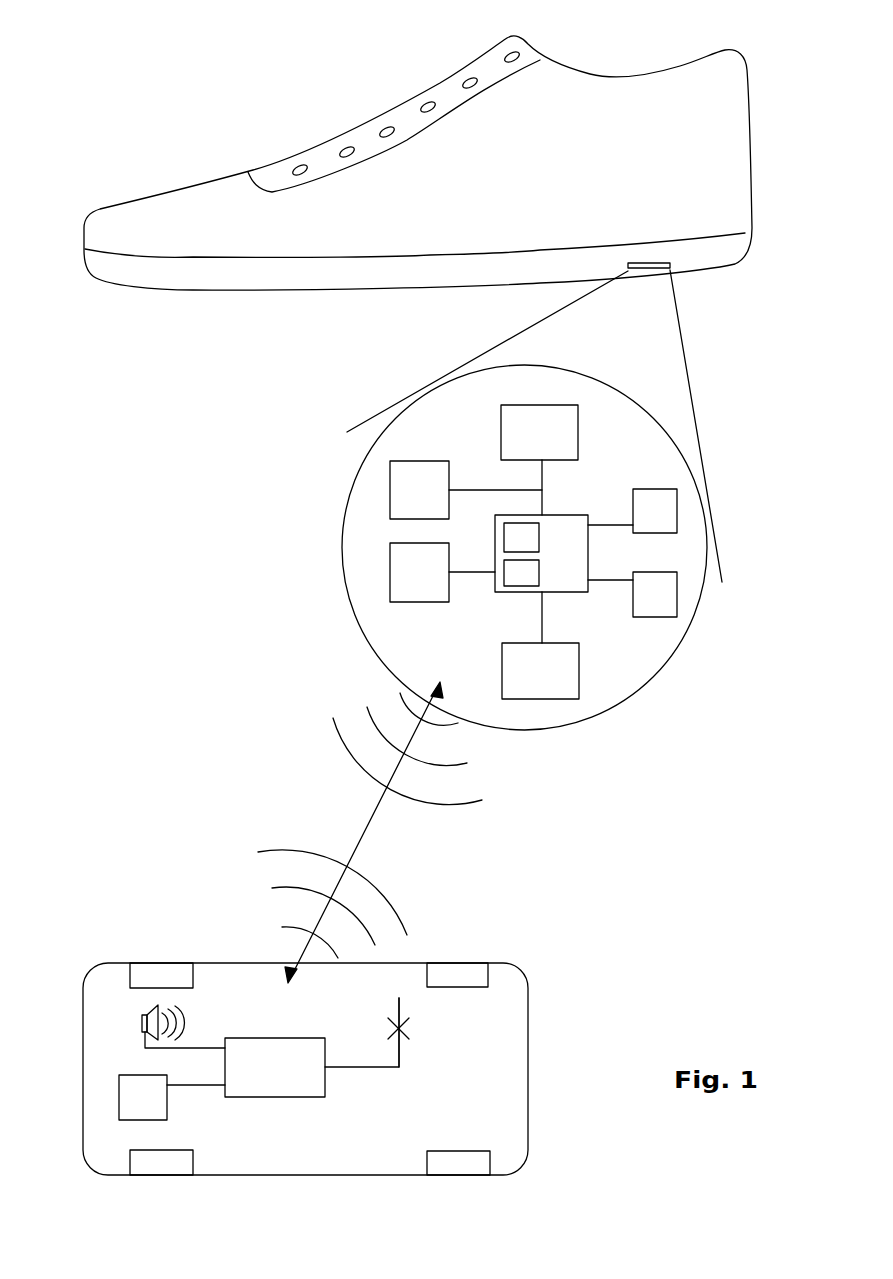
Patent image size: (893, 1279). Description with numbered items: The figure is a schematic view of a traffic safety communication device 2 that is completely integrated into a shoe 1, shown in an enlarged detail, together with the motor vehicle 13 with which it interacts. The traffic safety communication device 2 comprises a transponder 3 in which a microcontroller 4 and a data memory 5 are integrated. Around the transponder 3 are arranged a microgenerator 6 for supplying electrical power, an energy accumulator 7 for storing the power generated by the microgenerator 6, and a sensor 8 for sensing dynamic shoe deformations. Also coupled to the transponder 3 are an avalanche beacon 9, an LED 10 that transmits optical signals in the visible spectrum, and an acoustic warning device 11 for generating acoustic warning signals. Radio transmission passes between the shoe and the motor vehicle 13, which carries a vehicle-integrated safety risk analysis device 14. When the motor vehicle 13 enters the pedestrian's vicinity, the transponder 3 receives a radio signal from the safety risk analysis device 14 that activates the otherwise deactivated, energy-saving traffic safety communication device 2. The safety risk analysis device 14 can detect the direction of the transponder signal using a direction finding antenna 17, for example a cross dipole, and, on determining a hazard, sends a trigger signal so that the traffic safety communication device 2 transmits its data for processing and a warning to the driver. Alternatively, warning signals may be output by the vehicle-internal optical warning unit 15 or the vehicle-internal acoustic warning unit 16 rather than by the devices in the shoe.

The shoe 1 is at (217, 245).
The traffic safety communication device 2 is at (668, 640).
The transponder 3 is at (563, 550).
The microcontroller 4 is at (515, 535).
The data memory 5 is at (517, 580).
The microgenerator 6 is at (515, 432).
The energy accumulator 7 is at (402, 505).
The sensor 8 is at (557, 655).
The avalanche beacon 9 is at (410, 595).
The LED 10 is at (647, 497).
The acoustic warning device 11 is at (655, 605).
The motor vehicle 13 is at (495, 1105).
The safety risk analysis device 14 is at (282, 1083).
The vehicle-internal optical warning unit 15 is at (128, 1103).
The vehicle-internal acoustic warning unit 16 is at (142, 1022).
The direction finding antenna 17 is at (400, 1008).